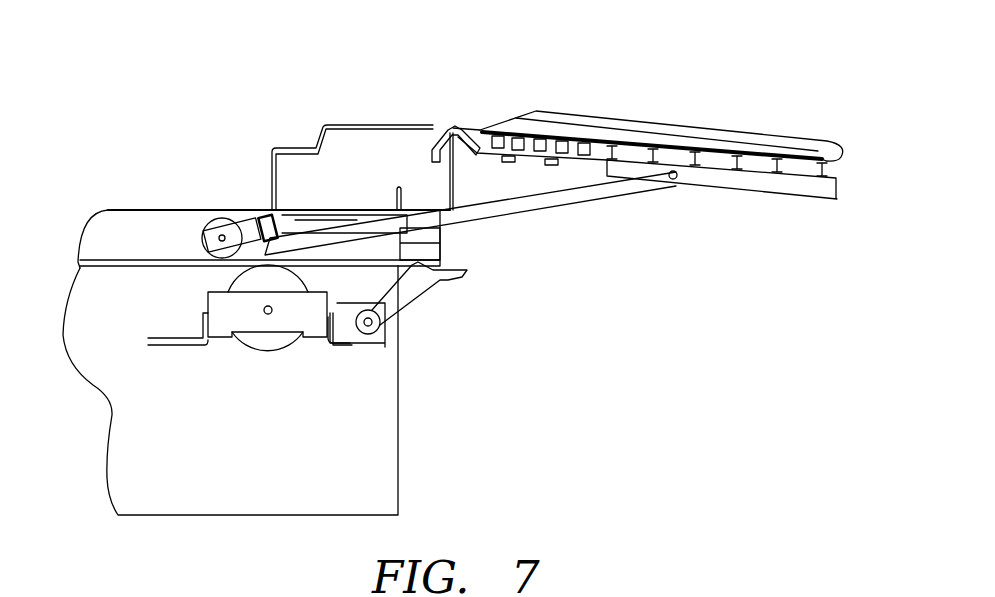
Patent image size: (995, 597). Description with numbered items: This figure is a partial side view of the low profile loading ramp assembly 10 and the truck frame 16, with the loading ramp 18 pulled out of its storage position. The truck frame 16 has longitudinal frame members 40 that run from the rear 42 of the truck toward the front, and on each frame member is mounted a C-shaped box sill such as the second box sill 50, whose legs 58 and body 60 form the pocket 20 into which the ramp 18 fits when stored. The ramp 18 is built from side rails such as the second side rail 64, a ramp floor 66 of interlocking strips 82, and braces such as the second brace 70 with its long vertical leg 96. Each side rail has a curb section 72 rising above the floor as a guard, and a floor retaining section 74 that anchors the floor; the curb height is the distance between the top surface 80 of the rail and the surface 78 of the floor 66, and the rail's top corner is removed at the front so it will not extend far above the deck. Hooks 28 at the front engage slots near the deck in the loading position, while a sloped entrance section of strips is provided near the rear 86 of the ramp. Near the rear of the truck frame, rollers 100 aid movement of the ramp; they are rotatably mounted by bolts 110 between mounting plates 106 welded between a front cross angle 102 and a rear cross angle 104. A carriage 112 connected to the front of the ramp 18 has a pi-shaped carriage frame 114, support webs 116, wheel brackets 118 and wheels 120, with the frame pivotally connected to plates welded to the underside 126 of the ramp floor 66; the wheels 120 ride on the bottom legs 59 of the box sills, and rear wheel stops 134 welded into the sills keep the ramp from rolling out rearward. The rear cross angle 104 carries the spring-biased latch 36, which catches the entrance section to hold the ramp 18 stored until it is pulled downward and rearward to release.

The low profile loading ramp assembly 10 is at (643, 60).
The truck frame 16 is at (387, 488).
The loading ramp 18 is at (751, 140).
The pocket 20 is at (110, 215).
The hooks 28 is at (452, 127).
The latch 36 is at (437, 284).
The frame members 40 is at (382, 458).
The rear of the truck 42 is at (458, 190).
The second box sill 50 is at (107, 210).
The legs of the box sills 58 is at (141, 207).
The bottom legs of the box sills 59 is at (82, 262).
The body of the box sill 60 is at (96, 236).
The second side rail 64 is at (712, 135).
The ramp floor 66 is at (836, 200).
The second brace 70 is at (792, 190).
The curb section 72 is at (836, 158).
The floor retaining section 74 is at (838, 186).
The surface of the ramp floor 78 is at (661, 150).
The top surface of the side rails 80 is at (798, 147).
The interlocking strips 82 is at (690, 162).
The rear of the ramp 86 is at (456, 126).
The long vertical leg 96 is at (765, 188).
The rollers 100 is at (272, 348).
The front cross angle 102 is at (148, 348).
The rear cross angle 104 is at (362, 347).
The mounting plates 106 is at (315, 329).
The bolts 110 is at (265, 315).
The carriage 112 is at (560, 193).
The carriage frame 114 is at (592, 185).
The support webs 116 is at (277, 224).
The wheel brackets 118 is at (238, 226).
The wheels 120 is at (205, 224).
The underside of the ramp floor 126 is at (580, 170).
The rear wheel stops 134 is at (402, 243).